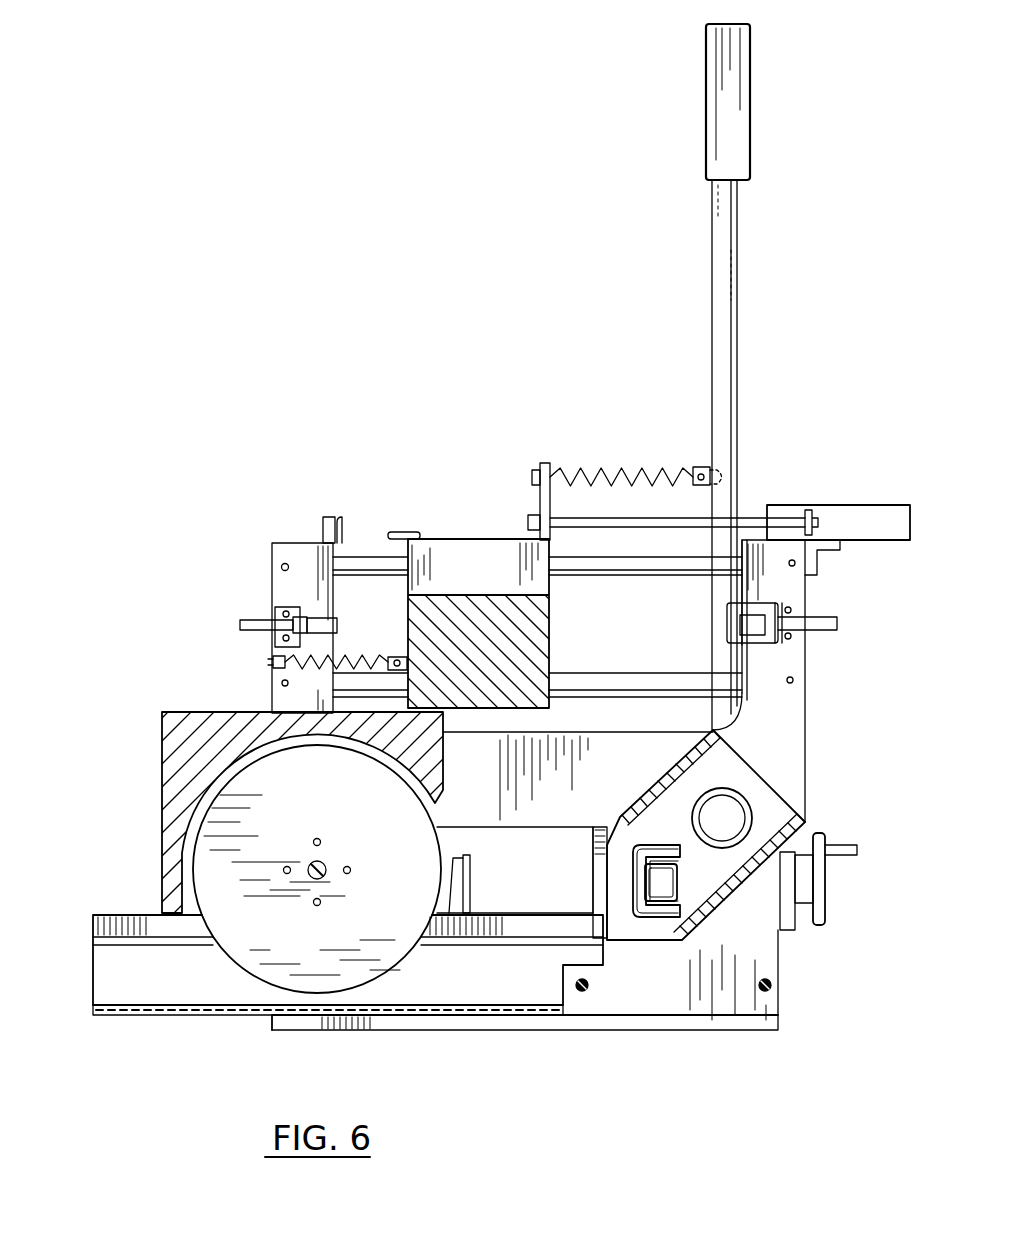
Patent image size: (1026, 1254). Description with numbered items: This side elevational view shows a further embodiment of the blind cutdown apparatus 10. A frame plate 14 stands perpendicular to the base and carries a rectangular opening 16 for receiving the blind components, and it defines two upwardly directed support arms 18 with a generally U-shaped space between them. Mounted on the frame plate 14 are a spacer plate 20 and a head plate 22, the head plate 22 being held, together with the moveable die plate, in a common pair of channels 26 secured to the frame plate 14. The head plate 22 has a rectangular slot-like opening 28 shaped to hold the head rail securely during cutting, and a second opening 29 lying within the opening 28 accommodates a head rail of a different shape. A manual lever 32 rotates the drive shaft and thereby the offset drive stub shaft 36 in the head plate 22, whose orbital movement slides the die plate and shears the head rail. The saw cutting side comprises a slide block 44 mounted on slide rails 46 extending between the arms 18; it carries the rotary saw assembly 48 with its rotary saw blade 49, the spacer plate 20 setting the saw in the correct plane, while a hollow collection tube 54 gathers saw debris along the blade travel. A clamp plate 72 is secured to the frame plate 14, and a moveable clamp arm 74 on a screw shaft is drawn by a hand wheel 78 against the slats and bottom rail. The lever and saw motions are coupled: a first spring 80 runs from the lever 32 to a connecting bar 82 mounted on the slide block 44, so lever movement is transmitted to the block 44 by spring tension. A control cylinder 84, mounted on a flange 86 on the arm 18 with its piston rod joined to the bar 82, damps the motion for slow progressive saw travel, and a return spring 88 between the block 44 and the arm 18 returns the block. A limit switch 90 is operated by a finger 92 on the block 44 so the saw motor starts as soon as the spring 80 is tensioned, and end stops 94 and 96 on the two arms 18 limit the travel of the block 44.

The apparatus 10 is at (421, 507).
The frame plate 14 is at (782, 706).
The rectangular opening 16 is at (516, 892).
The support arms 18 is at (294, 548).
The spacer plate 20 is at (210, 715).
The head plate 22 is at (722, 762).
The channels 26 is at (645, 795).
The rectangular slot-like opening 28 is at (641, 917).
The second opening 29 is at (677, 868).
The manual lever 32 is at (710, 240).
The offset drive stub shaft 36 is at (745, 797).
The slide block 44 is at (487, 539).
The slide rails 46 is at (683, 555).
The rotary saw assembly 48 is at (140, 721).
The rotary saw blade 49 is at (338, 806).
The hollow collection tube 54 is at (145, 1017).
The clamp plate 72 is at (593, 891).
The moveable clamp arm 74 is at (470, 866).
The hand wheel 78 is at (827, 910).
The first spring 80 is at (608, 470).
The connecting bar 82 is at (546, 463).
The control cylinder 84 is at (781, 505).
The flange 86 is at (852, 550).
The return spring 88 is at (360, 655).
The limit switch 90 is at (337, 517).
The finger 92 is at (397, 530).
The end stop 94 is at (820, 615).
The end stop 96 is at (263, 617).